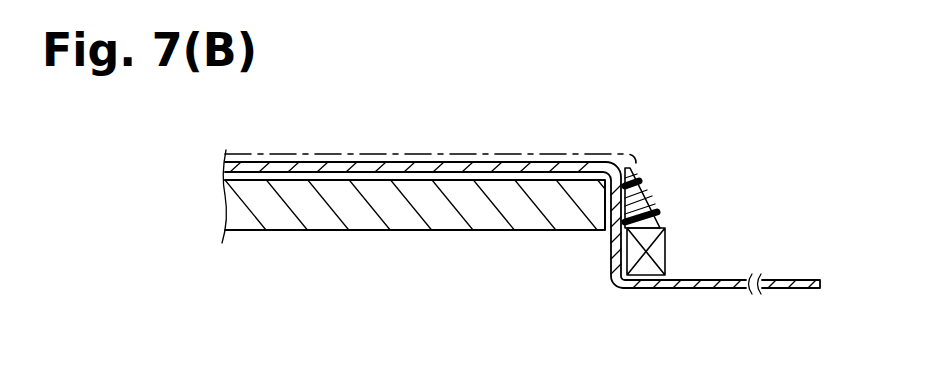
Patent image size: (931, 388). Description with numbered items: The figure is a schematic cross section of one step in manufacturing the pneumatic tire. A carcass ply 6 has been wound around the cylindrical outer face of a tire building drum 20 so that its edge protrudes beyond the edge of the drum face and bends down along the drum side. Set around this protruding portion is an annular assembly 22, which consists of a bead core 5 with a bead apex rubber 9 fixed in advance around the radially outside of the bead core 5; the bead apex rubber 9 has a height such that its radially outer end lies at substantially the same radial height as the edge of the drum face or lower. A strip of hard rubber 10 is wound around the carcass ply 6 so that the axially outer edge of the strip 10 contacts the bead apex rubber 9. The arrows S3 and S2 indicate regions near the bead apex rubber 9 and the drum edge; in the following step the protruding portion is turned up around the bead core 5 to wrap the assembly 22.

The strip of hard rubber 10 is at (338, 153).
The tire building drum 20 is at (412, 231).
The carcass ply 6 is at (703, 289).
The bead apex rubber 9 is at (645, 203).
The bead core 5 is at (665, 250).
The annular assembly 22 is at (750, 217).
The space S3 is at (641, 112).
The space S2 is at (702, 178).